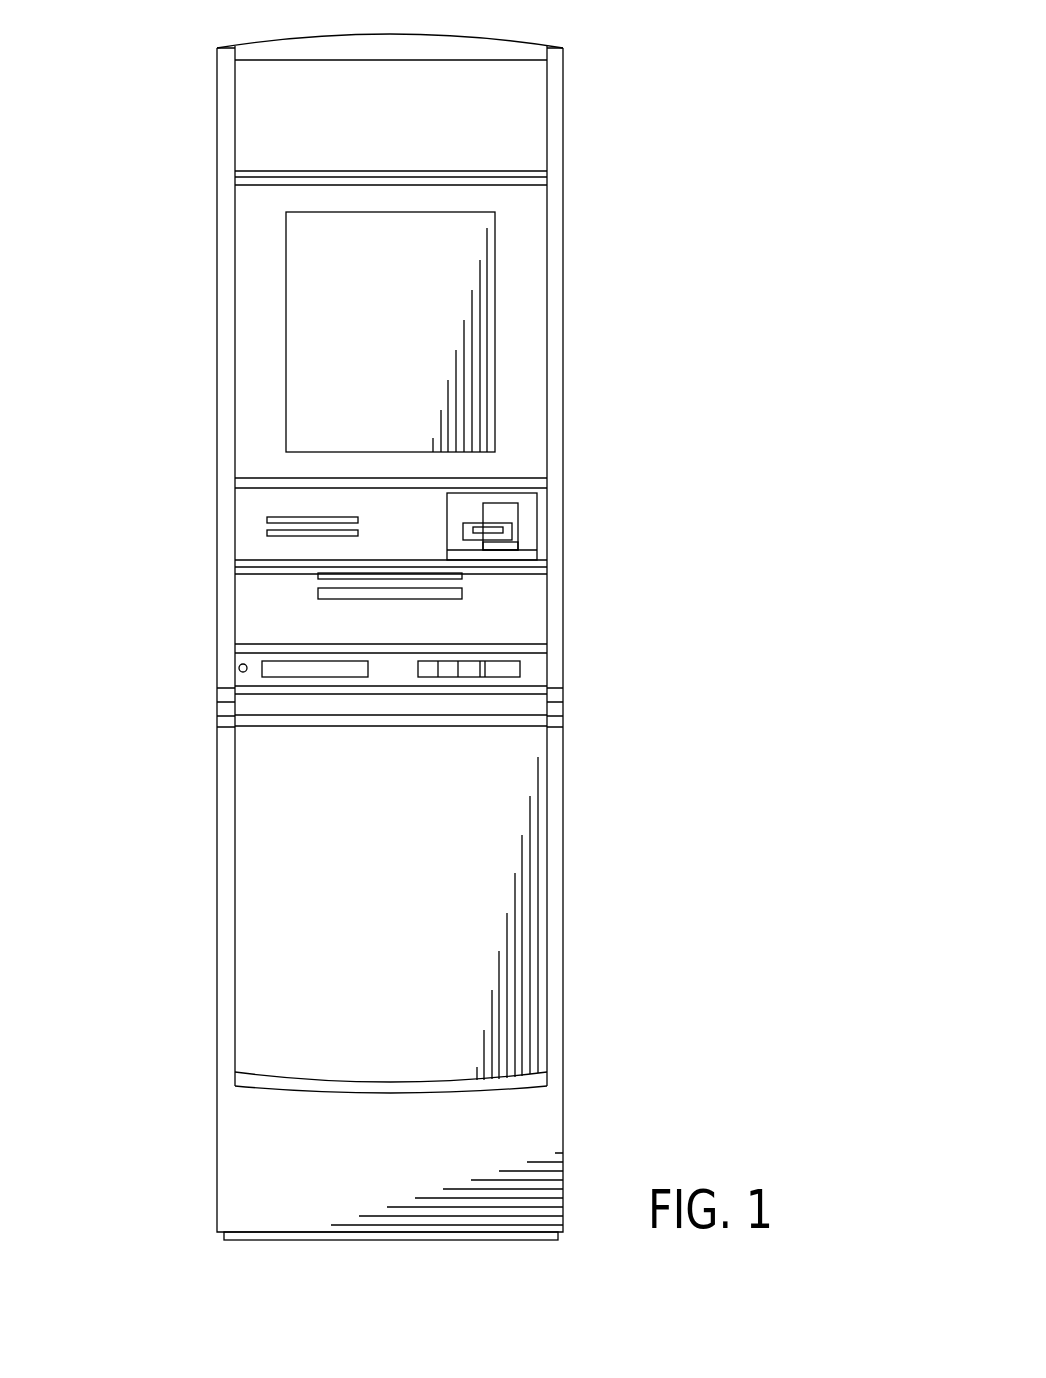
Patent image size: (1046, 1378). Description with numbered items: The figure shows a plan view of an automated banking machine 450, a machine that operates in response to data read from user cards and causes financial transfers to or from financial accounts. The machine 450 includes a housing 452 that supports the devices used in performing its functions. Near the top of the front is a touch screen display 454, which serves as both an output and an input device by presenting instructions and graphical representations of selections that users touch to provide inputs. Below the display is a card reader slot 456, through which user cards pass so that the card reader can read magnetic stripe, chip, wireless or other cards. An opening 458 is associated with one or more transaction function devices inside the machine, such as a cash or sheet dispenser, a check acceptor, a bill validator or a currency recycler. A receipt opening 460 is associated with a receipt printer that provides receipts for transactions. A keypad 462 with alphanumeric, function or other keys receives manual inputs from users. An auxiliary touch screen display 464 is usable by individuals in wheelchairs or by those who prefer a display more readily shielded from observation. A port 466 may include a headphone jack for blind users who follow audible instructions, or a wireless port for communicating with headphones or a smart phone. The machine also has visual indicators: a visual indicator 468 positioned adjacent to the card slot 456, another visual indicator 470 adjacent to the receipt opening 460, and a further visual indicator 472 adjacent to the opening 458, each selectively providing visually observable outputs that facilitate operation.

The automated banking machine 450 is at (735, 208).
The housing 452 is at (563, 412).
The touch screen display 454 is at (443, 303).
The card reader slot 456 is at (512, 530).
The opening 458 is at (462, 588).
The receipt opening 460 is at (290, 535).
The keypad 462 is at (510, 667).
The auxiliary touch screen display 464 is at (273, 663).
The port 466 is at (239, 670).
The visual indicator 468 is at (532, 493).
The visual indicator 470 is at (287, 513).
The visual indicator 472 is at (317, 575).